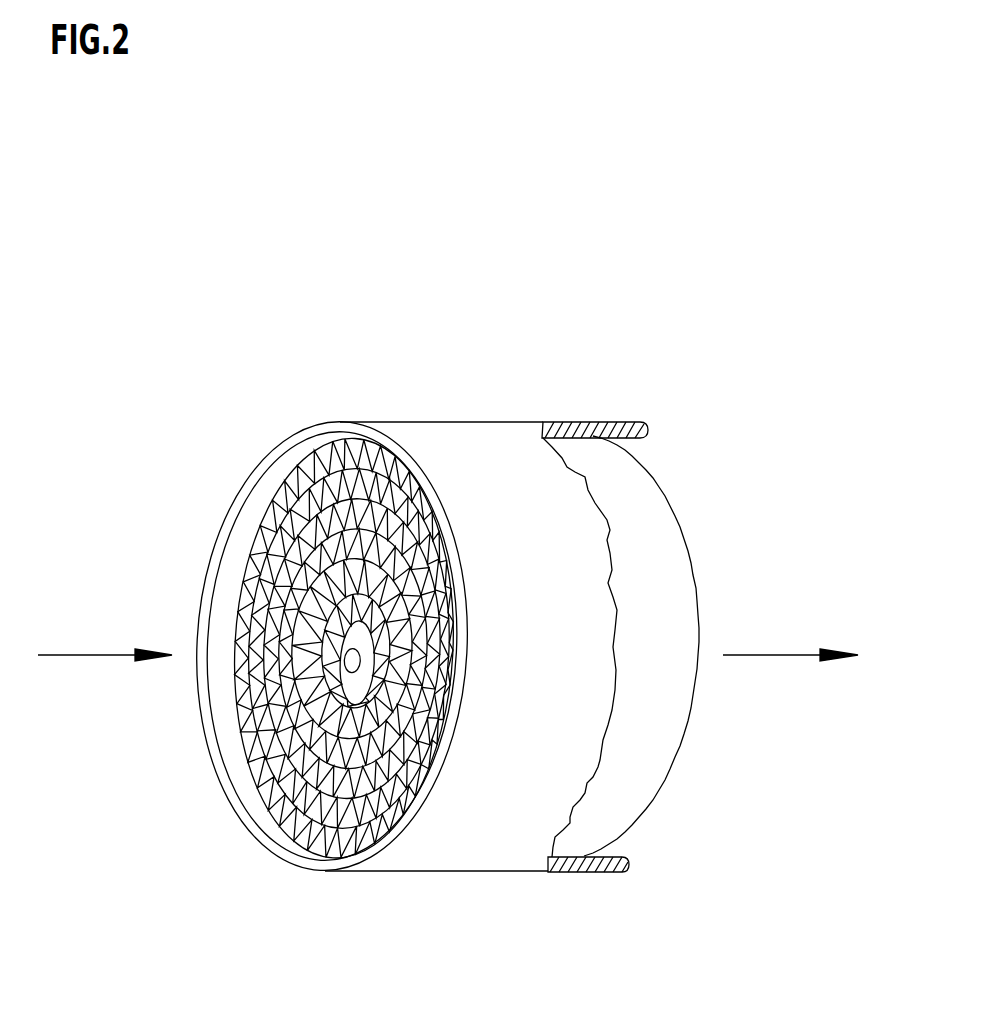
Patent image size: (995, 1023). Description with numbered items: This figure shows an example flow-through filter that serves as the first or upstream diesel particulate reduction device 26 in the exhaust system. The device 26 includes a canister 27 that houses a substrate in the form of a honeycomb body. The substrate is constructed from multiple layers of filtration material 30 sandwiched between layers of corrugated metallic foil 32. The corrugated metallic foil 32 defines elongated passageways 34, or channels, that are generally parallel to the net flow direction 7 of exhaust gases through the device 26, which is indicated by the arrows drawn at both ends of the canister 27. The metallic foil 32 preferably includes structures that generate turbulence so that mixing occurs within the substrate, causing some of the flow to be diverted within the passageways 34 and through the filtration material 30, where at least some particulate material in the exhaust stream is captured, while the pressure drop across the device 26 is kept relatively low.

The first diesel particulate reduction device 26 is at (528, 304).
The canister 27 is at (572, 422).
The filtration material 30 is at (240, 727).
The corrugated metallic foil 32 is at (260, 763).
The elongated passageways 34 is at (243, 703).
The net flow direction 7 is at (66, 654).